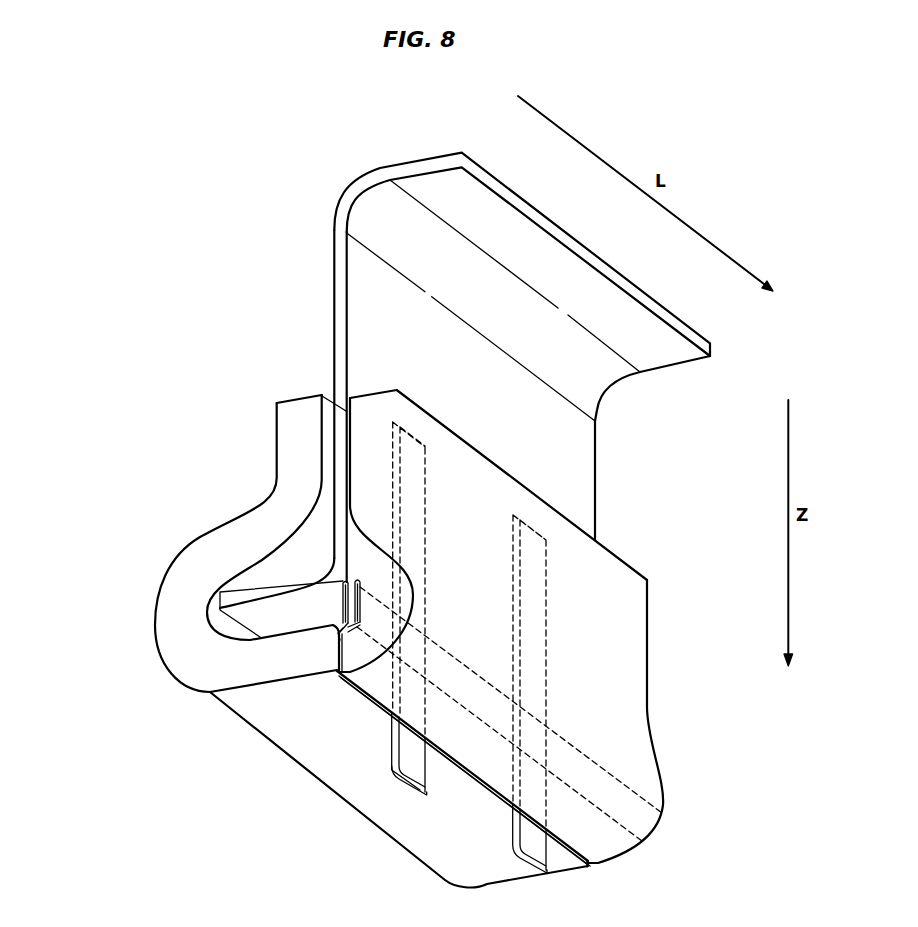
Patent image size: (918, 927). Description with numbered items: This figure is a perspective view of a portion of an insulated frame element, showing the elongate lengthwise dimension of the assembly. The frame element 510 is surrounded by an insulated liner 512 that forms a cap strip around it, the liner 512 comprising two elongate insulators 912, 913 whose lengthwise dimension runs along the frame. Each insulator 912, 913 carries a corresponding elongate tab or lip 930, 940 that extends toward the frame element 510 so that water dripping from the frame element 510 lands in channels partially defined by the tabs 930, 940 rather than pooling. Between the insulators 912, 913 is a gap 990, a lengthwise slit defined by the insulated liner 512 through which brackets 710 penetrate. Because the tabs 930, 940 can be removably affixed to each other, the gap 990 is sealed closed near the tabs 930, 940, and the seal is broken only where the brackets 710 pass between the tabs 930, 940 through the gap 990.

The frame element 510 is at (677, 325).
The insulated liner 512 is at (108, 428).
The brackets 710 is at (543, 607).
The insulator 912 is at (192, 565).
The insulator 913 is at (642, 722).
The tab 930 is at (341, 597).
The tab 940 is at (358, 580).
The gap 990 is at (339, 683).